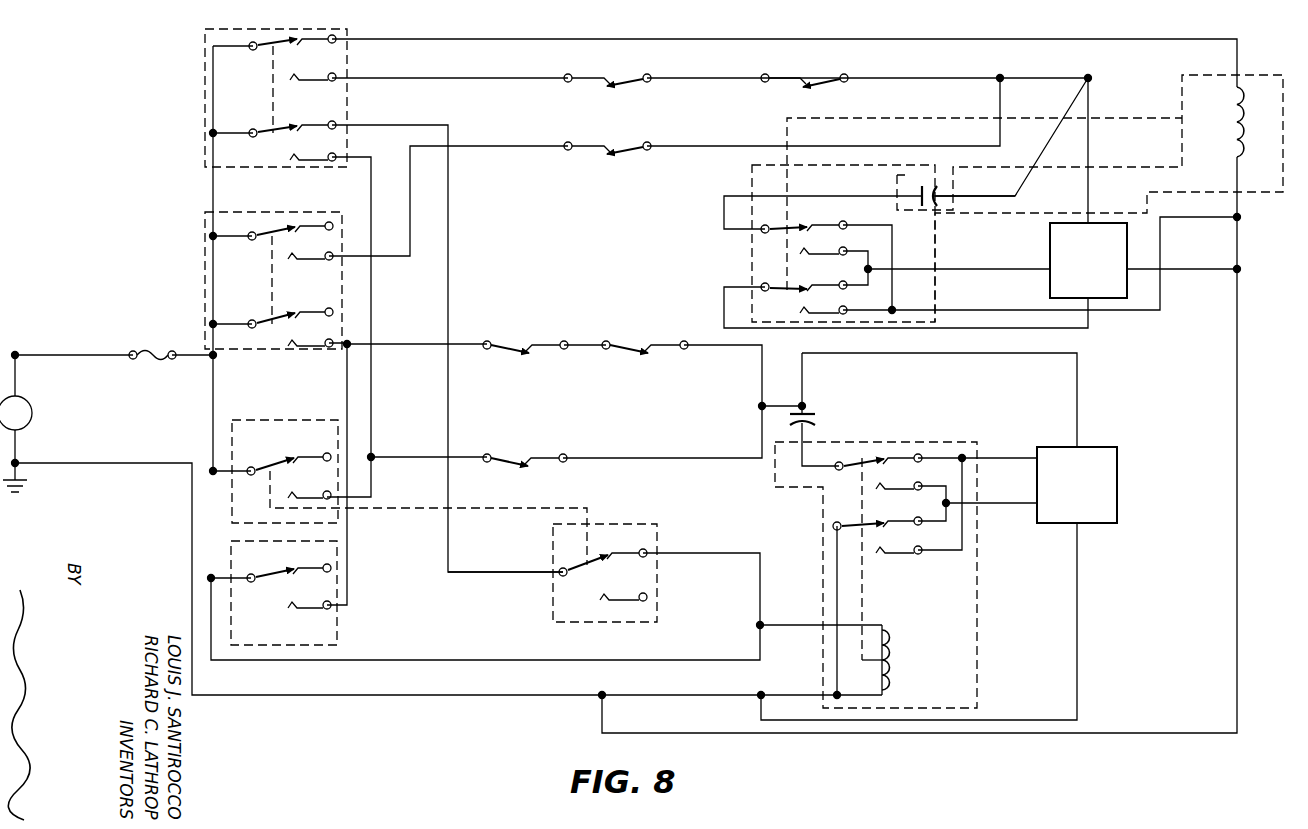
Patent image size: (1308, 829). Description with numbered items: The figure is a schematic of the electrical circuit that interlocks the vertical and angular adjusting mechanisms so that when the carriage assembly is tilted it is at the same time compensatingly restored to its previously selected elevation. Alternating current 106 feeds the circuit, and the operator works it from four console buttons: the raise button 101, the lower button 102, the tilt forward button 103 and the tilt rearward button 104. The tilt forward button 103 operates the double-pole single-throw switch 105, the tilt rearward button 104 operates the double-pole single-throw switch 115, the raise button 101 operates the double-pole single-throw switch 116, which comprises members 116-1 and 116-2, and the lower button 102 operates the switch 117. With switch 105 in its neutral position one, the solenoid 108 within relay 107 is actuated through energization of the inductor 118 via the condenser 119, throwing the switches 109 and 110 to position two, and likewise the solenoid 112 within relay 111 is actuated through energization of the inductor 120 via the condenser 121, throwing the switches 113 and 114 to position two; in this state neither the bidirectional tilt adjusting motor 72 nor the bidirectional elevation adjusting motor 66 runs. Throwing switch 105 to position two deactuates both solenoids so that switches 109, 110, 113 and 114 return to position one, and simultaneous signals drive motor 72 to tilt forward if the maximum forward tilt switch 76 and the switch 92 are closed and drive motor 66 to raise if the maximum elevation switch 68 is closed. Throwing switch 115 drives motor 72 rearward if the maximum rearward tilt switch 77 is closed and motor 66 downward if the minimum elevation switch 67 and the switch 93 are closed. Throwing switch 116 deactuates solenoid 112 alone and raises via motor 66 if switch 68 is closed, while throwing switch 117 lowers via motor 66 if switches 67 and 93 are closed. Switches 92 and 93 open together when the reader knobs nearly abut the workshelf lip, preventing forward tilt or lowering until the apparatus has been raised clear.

The bidirectional elevation adjusting motor 66 is at (1089, 496).
The minimum elevation switch 67 is at (506, 342).
The maximum elevation switch 68 is at (512, 451).
The bidirectional tilt adjusting motor 72 is at (1099, 272).
The maximum forward tilt switch 76 is at (620, 78).
The maximum rearward tilt switch 77 is at (630, 142).
The switch 92 is at (818, 79).
The switch 93 is at (628, 342).
The raise button 101 is at (272, 420).
The lower button 102 is at (337, 628).
The tilt forward button 103 is at (200, 80).
The tilt rearward button 104 is at (200, 265).
The double-pole single-throw switch 105 is at (268, 64).
The alternating current 106 is at (33, 411).
The relay 107 is at (1290, 163).
The solenoid 108 is at (1140, 115).
The switch 109 is at (766, 228).
The switch 110 is at (764, 282).
The relay 111 is at (980, 599).
The solenoid 112 is at (871, 577).
The switch 113 is at (844, 470).
The switch 114 is at (841, 522).
The double-pole single-throw switch 115 is at (270, 255).
The double-pole single-throw switch 116 is at (386, 514).
The switch member 116-1 is at (270, 475).
The switch member 116-2 is at (581, 576).
The switch 117 is at (263, 580).
The inductor 118 is at (1256, 144).
The condenser 119 is at (908, 194).
The inductor 120 is at (891, 674).
The condenser 121 is at (818, 418).